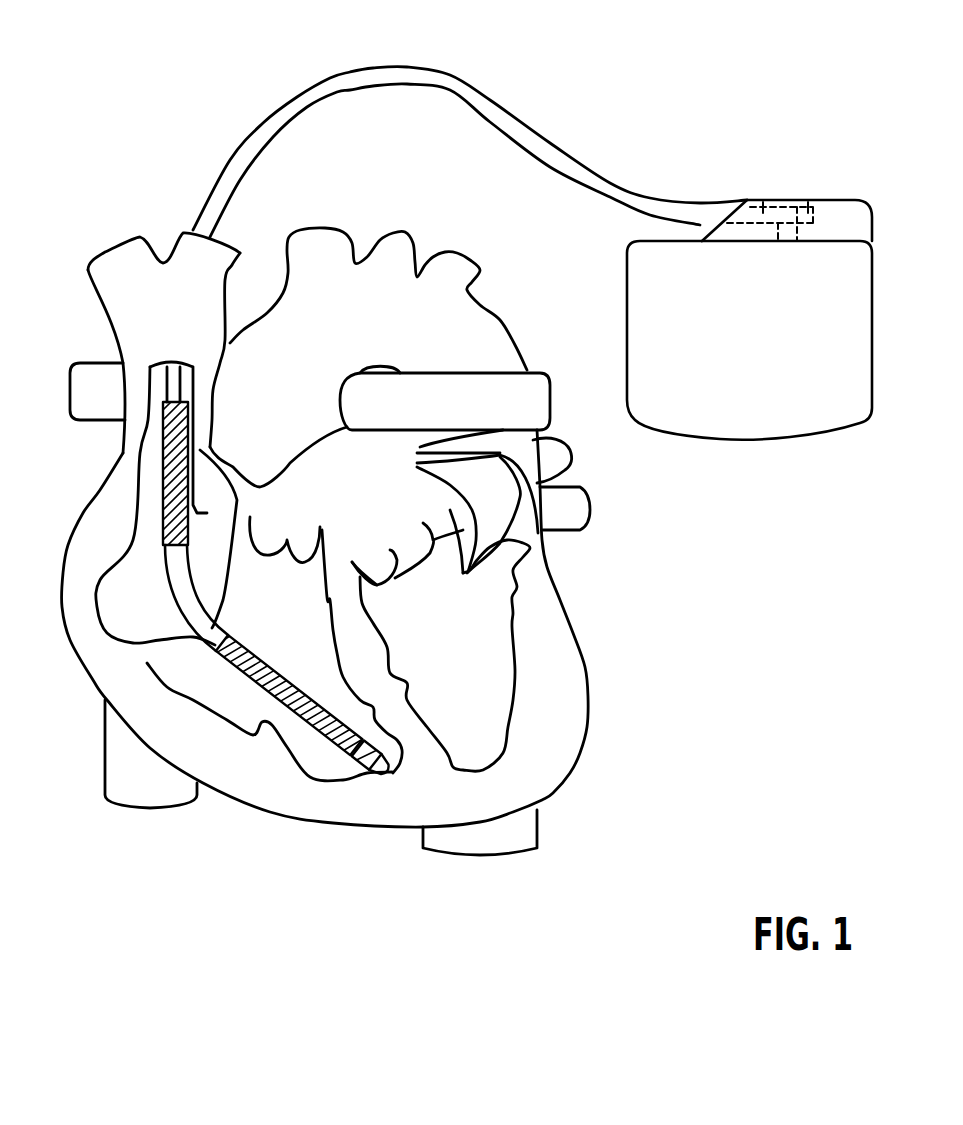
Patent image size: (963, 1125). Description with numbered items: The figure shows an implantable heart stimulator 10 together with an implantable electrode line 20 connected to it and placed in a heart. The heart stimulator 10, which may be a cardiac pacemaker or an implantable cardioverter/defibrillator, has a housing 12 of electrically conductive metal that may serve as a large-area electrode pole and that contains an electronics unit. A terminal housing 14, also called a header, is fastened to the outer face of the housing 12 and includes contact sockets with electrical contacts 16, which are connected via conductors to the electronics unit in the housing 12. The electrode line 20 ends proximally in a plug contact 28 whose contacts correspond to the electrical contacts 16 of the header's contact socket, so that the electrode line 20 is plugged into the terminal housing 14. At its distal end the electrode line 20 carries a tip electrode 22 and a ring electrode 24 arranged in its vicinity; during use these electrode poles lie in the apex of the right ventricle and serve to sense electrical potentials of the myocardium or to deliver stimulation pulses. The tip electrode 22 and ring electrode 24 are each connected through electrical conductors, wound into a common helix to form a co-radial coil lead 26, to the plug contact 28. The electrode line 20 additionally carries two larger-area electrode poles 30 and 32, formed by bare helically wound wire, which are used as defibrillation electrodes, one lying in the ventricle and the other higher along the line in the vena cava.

The implantable heart stimulator 10 is at (780, 470).
The housing 12 is at (700, 432).
The terminal housing 14 is at (787, 189).
The electrical contacts 16 is at (806, 198).
The plug contact 28 is at (757, 195).
The electrode line 20 is at (399, 447).
The lead 26 is at (430, 75).
The electrode pole 32 is at (160, 485).
The electrode pole 30 is at (265, 688).
The ring electrode 24 is at (352, 763).
The tip electrode 22 is at (391, 771).